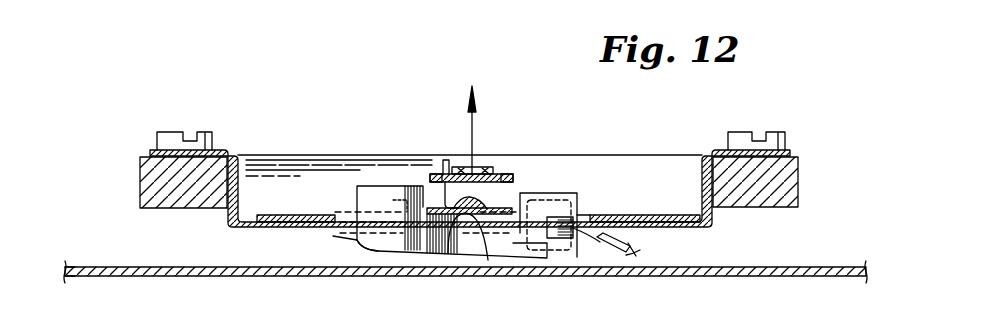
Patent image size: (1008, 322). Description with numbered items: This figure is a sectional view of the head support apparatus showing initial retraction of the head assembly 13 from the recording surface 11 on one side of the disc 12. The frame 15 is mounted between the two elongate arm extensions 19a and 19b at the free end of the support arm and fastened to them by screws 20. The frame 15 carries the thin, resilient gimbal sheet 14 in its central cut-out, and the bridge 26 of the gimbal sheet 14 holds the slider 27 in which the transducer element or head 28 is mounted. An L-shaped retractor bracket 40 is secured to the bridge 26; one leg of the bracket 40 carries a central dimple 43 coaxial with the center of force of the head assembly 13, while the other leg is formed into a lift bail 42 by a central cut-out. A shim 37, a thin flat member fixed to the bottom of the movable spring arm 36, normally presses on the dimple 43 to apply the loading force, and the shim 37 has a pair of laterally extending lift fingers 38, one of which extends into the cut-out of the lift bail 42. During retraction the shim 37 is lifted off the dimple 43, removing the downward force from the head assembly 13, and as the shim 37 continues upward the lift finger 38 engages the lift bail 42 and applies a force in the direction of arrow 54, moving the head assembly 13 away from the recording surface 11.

The recording surface 11 is at (123, 266).
The disc 12 is at (172, 276).
The magnetic transducer assembly 13 is at (368, 252).
The gimbal sheet 14 is at (278, 215).
The frame 15 is at (241, 180).
The arm extension 19a is at (790, 186).
The arm extension 19b is at (150, 184).
The screws 20 is at (169, 133).
The bridge 26 is at (488, 258).
The slider 27 is at (355, 238).
The transducer element 28 is at (546, 201).
The movable arm 36 is at (497, 173).
The shim 37 is at (467, 166).
The lift fingers 38 is at (430, 177).
The retractor bracket 40 is at (460, 210).
The lift bail 42 is at (442, 161).
The dimple 43 is at (472, 199).
The arrow 54 is at (475, 128).